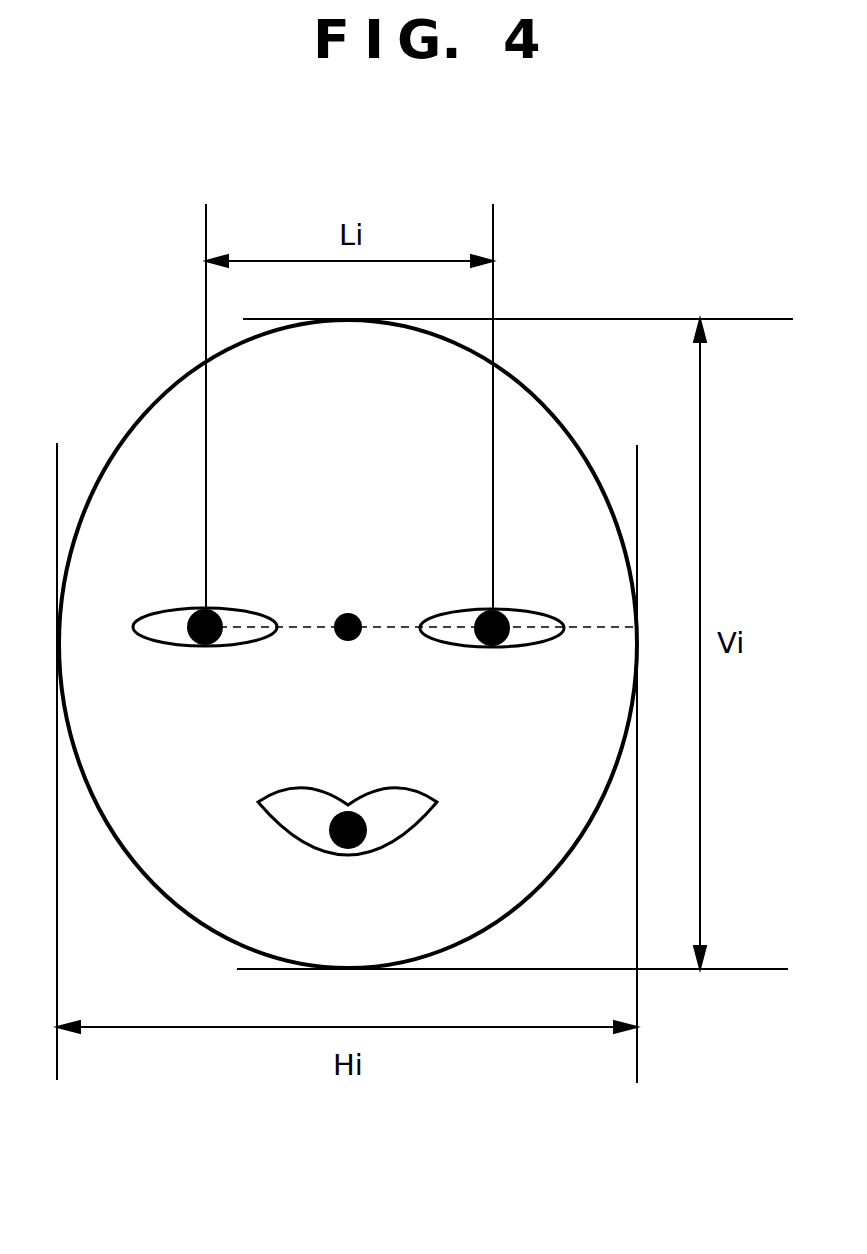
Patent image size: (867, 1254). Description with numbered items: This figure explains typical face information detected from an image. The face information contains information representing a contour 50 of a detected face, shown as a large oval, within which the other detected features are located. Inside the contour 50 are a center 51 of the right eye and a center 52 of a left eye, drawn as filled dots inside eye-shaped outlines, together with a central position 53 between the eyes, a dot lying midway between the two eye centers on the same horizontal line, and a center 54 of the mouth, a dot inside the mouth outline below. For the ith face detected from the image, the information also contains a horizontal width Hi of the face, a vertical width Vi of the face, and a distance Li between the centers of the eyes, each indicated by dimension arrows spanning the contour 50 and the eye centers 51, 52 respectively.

The contour of a detected face 50 is at (152, 400).
The center of the right eye 51 is at (215, 611).
The center of a left eye 52 is at (505, 611).
The central position between the eyes 53 is at (340, 641).
The center of the mouth 54 is at (358, 812).